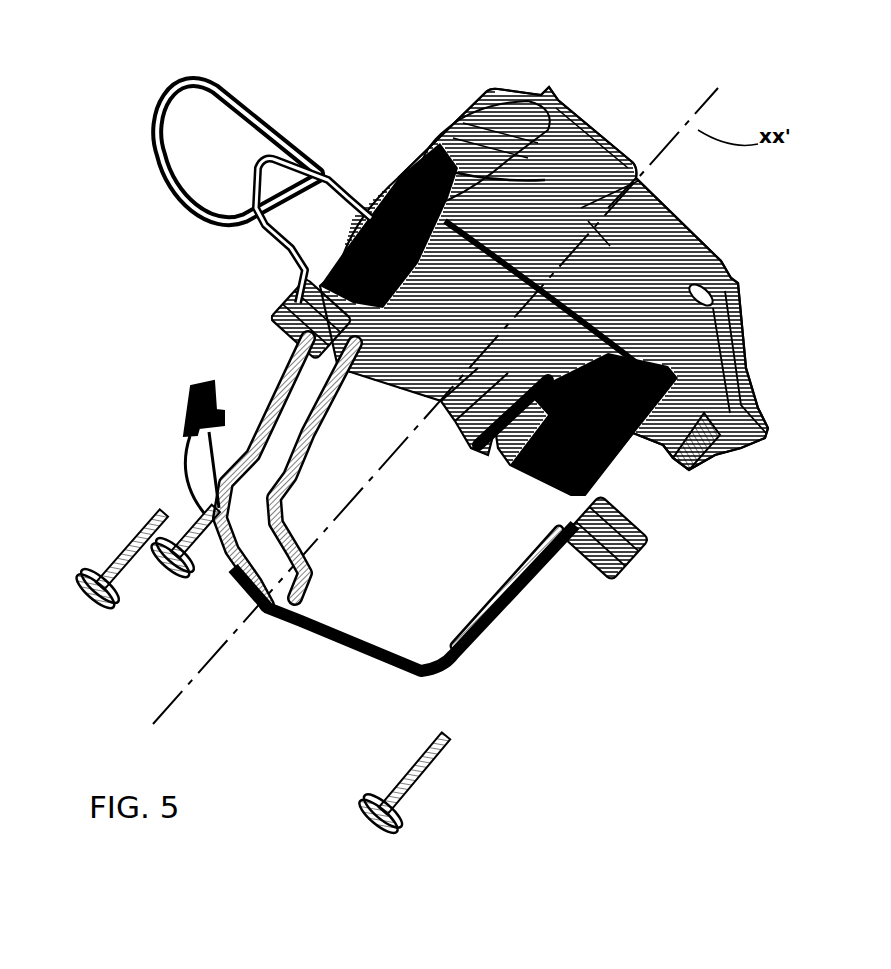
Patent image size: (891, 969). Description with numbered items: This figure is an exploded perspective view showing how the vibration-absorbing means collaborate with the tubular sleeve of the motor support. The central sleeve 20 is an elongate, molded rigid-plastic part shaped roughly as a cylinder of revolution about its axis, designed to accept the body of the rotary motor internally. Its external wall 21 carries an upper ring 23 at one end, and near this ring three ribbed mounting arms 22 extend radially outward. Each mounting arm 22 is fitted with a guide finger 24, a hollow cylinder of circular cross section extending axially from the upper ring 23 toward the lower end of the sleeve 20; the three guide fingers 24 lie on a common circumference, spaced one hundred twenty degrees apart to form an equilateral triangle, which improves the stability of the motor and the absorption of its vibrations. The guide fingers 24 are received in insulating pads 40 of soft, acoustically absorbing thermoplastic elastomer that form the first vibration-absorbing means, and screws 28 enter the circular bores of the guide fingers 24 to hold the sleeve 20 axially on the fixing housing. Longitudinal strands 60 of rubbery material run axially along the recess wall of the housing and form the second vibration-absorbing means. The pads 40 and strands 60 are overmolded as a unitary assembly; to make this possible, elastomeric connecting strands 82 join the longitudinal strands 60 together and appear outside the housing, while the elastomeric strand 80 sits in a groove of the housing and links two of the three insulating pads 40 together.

The central sleeve 20 is at (600, 106).
The external wall 21 is at (708, 260).
The mounting arms 22 is at (400, 167).
The upper ring 23 is at (456, 107).
The guide fingers 24 is at (377, 182).
The screws 28 is at (123, 530).
The insulating pads 40 is at (280, 290).
The longitudinal strands 60 is at (250, 423).
The connecting strand 80 is at (155, 122).
The connecting strands 82 is at (218, 545).